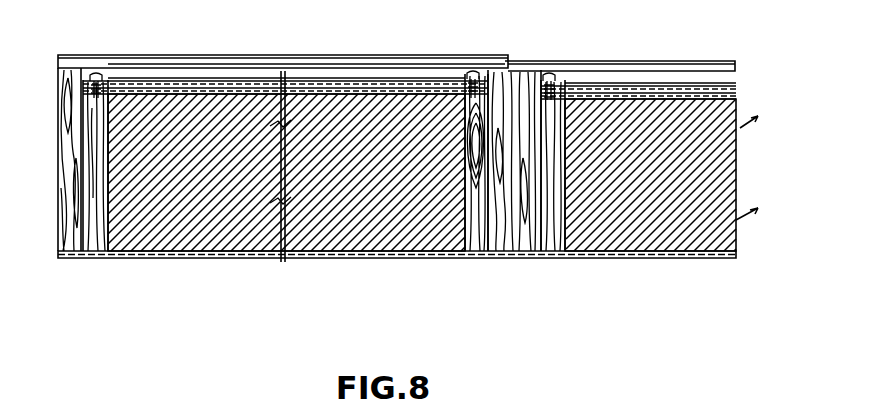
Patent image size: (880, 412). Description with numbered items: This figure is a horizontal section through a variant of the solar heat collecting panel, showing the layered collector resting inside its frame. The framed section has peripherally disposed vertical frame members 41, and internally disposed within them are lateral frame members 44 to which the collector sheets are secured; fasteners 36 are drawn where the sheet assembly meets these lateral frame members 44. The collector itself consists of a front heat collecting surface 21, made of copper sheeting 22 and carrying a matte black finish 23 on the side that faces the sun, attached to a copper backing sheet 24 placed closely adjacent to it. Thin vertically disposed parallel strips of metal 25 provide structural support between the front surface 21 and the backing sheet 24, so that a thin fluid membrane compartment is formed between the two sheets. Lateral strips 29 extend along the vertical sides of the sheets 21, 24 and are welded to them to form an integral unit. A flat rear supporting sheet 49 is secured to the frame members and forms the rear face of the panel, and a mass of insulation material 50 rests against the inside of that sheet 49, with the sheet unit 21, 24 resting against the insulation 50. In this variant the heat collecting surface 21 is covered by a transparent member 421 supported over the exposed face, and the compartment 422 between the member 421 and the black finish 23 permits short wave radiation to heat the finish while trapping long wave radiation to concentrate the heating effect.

The front heat collecting surface 21 is at (225, 79).
The copper sheeting 22 is at (170, 75).
The matte black finish 23 is at (197, 77).
The copper backing sheet 24 is at (258, 82).
The strips of metal 25 is at (340, 82).
The lateral strips 29 is at (98, 74).
The screw fastener 36 is at (88, 68).
The vertical frame members 41 is at (63, 250).
The lateral frame members 44 is at (84, 248).
The flat rear supporting sheet 49 is at (139, 250).
The insulation material 50 is at (358, 236).
The transparent member 421 is at (149, 50).
The compartment 422 is at (310, 64).